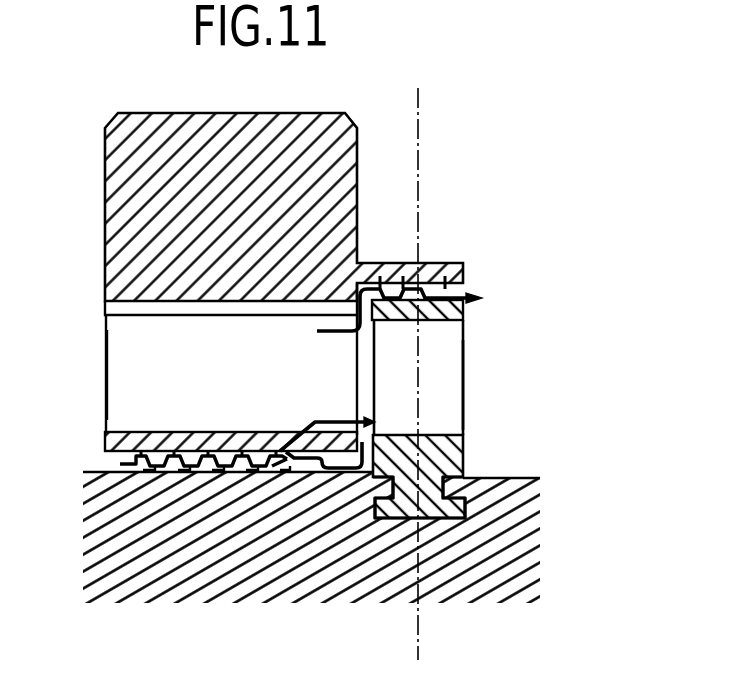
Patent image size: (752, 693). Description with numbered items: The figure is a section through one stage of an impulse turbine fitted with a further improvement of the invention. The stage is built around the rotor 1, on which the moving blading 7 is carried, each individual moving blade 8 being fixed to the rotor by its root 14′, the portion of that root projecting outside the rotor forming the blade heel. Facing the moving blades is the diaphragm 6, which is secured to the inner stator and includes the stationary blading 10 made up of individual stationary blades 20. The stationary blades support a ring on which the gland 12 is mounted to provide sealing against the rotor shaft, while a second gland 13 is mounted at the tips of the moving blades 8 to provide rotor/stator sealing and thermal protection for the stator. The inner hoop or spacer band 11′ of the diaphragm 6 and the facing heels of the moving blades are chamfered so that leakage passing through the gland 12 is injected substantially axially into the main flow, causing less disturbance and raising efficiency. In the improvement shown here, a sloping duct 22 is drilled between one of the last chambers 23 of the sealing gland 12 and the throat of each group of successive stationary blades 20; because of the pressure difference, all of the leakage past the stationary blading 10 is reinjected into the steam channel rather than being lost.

The rotor 1 is at (95, 555).
The diaphragm 6 is at (124, 184).
The moving blading 7 is at (470, 421).
The moving blade 8 is at (460, 378).
The stationary blading 10 is at (100, 370).
The inner hoop or spacer band 11' is at (205, 411).
The gland 12 is at (108, 445).
The gland 13 is at (468, 290).
The root 14′ is at (472, 478).
The stationary blade 20 is at (118, 400).
The sloping duct 22 is at (283, 433).
The chamber 23 is at (280, 468).